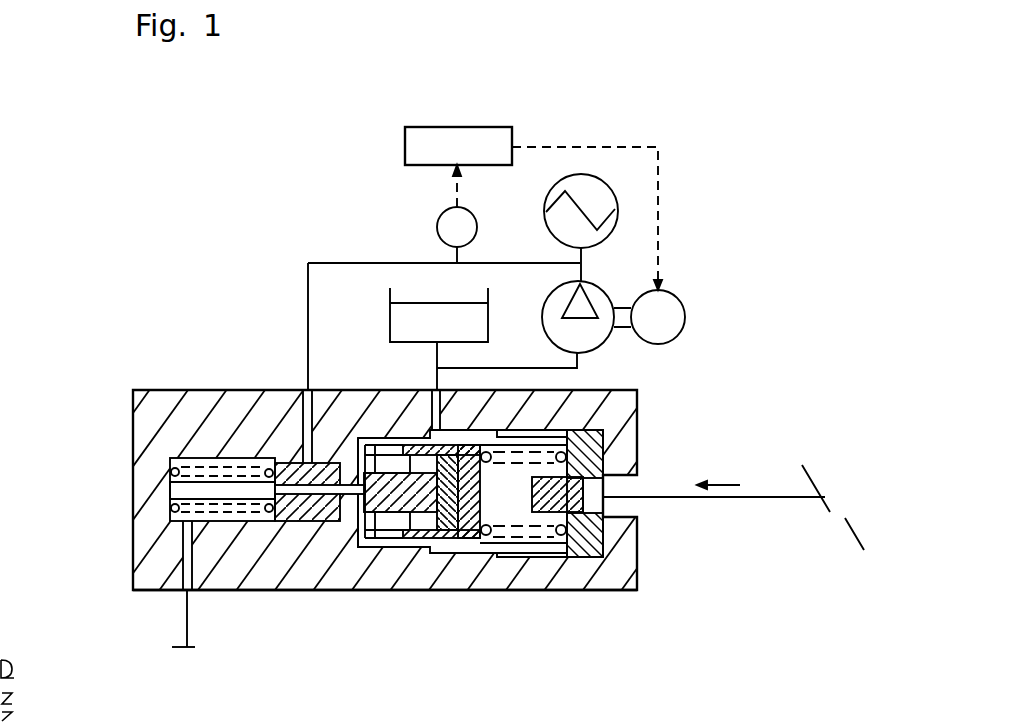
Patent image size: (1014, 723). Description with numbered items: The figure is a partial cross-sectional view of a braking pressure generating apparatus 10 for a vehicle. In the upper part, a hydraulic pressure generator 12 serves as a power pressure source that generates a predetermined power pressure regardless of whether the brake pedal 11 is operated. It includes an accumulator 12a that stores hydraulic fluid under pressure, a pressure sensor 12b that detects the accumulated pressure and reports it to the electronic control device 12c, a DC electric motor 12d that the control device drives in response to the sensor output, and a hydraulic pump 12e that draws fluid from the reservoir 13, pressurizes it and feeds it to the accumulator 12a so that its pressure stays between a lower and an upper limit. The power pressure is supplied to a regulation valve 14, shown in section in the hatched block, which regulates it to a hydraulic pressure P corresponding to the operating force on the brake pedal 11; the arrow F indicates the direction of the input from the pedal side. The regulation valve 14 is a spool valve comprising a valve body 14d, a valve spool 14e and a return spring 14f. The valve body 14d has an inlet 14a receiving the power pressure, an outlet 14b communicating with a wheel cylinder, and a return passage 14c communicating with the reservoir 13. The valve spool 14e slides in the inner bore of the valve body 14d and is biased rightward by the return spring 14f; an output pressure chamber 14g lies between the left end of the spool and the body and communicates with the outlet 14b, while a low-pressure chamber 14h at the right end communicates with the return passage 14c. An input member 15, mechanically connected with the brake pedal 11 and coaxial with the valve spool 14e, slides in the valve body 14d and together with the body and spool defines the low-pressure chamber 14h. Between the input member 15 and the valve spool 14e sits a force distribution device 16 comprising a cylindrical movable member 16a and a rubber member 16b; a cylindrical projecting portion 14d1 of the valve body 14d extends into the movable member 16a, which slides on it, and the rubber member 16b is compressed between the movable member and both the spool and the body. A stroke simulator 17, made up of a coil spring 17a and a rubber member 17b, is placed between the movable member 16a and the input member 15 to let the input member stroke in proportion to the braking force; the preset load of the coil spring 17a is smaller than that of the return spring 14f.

The braking pressure generating apparatus 10 is at (213, 302).
The brake pedal 11 is at (838, 518).
The hydraulic pressure generator 12 is at (684, 203).
The accumulator 12a is at (595, 190).
The pressure sensor 12b is at (437, 226).
The electronic control device (ECU) 12c is at (502, 138).
The DC electric motor 12d is at (672, 298).
The hydraulic pump 12e is at (597, 342).
The reservoir 13 is at (390, 320).
The regulation valve 14 is at (338, 594).
The inlet 14a is at (303, 398).
The outlet 14b is at (170, 588).
The return passage 14c is at (433, 397).
The valve body 14d is at (272, 580).
The cylindrical projecting portion 14d1 is at (385, 545).
The valve spool 14e is at (277, 463).
The return spring 14f is at (173, 472).
The output pressure chamber 14g is at (180, 488).
The low-pressure chamber 14h is at (470, 440).
The input member 15 is at (640, 532).
The force distribution device 16 is at (462, 548).
The cylindrical movable member 16a is at (482, 482).
The rubber member 16b is at (458, 545).
The stroke simulator 17 is at (555, 555).
The coil spring 17a is at (600, 414).
The rubber member 17b is at (602, 498).
The hydraulic pressure P is at (190, 618).
The fluid flow direction F is at (733, 483).